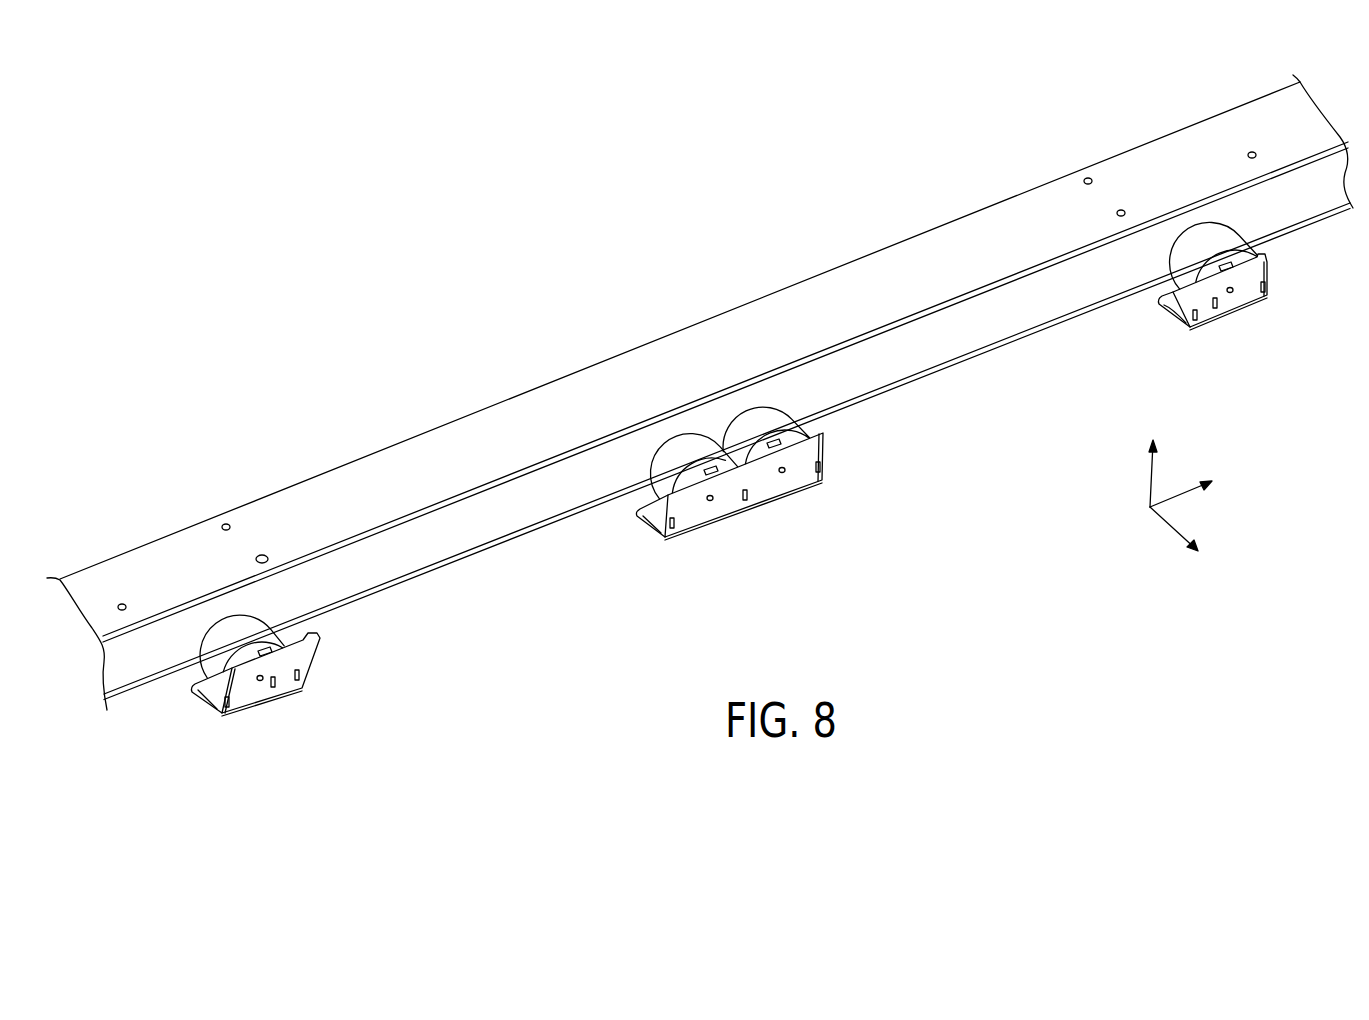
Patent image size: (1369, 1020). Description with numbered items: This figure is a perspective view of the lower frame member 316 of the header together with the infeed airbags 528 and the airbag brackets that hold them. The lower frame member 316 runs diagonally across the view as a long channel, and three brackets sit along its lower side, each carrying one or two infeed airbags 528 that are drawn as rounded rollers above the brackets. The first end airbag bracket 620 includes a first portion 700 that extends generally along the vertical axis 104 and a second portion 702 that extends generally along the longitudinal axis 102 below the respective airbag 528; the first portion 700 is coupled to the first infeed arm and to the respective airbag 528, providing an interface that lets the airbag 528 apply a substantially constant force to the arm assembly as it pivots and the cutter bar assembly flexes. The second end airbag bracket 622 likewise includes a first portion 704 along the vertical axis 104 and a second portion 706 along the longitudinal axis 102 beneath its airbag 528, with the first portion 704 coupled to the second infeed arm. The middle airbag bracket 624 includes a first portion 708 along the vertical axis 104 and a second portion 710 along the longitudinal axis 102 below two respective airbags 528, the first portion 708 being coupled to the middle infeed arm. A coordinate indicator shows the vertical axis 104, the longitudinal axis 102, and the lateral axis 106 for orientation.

The lower frame member 316 is at (424, 433).
The infeed airbags 528 is at (207, 628).
The first portion 700 is at (1240, 338).
The first end airbag bracket 620 is at (1228, 318).
The second portion 702 is at (1163, 322).
The first portion 708 is at (775, 513).
The middle airbag bracket 624 is at (743, 510).
The second portion 710 is at (645, 527).
The first portion 704 is at (254, 713).
The second end airbag bracket 622 is at (258, 705).
The second portion 706 is at (212, 703).
The vertical axis 104 is at (1150, 485).
The longitudinal axis 102 is at (1167, 523).
The lateral axis 106 is at (1178, 497).